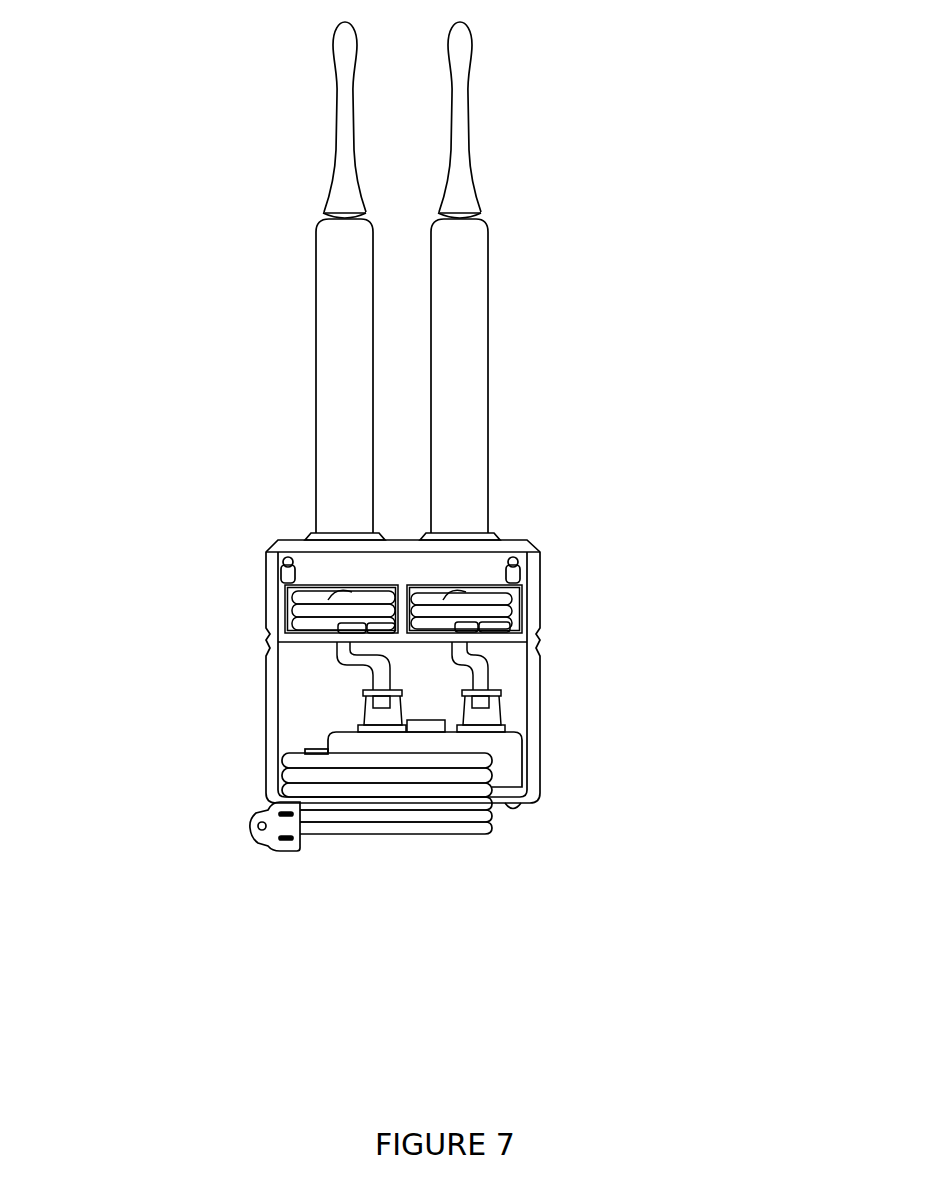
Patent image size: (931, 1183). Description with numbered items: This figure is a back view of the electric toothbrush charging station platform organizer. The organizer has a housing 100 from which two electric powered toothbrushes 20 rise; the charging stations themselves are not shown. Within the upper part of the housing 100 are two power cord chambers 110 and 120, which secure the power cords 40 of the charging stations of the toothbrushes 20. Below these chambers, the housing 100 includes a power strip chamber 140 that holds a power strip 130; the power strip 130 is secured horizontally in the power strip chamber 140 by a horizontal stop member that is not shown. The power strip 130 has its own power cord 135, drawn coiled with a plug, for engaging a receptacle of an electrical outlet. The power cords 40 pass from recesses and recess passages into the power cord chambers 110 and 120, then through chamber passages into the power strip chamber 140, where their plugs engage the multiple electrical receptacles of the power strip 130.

The electric powered toothbrush 20 is at (340, 438).
The power cord 40 is at (442, 600).
The housing 100 is at (260, 583).
The power cord chamber 110 is at (283, 608).
The power cord chamber 120 is at (520, 602).
The power strip 130 is at (497, 752).
The power cord 135 is at (428, 802).
The power strip chamber 140 is at (498, 660).